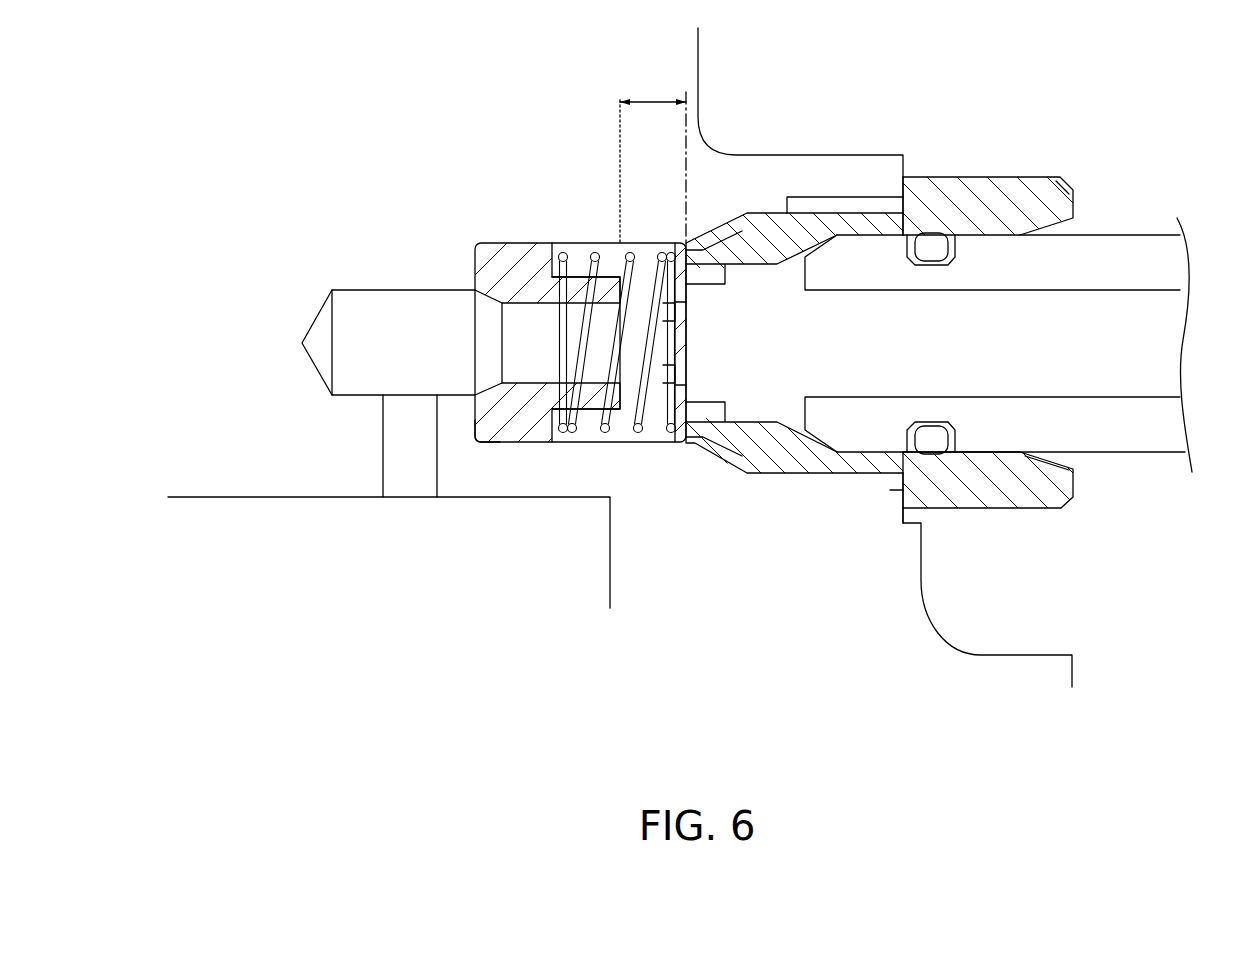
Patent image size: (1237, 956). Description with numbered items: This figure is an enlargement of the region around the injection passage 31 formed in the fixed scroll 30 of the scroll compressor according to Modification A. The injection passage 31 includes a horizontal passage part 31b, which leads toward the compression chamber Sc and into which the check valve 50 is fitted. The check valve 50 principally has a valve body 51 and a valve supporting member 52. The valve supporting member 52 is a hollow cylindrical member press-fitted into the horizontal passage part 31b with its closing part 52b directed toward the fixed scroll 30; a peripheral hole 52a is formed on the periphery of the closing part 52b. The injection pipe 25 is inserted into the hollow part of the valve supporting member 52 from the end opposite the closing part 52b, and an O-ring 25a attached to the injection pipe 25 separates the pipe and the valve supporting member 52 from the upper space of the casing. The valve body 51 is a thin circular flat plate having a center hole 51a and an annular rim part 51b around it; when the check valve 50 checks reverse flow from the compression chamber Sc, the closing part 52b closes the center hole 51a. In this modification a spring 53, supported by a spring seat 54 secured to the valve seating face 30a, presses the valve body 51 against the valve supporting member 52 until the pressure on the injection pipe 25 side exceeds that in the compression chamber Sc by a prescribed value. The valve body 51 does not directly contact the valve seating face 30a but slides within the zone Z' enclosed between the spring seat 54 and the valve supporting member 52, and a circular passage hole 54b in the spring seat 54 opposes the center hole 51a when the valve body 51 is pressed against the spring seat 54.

The injection pipe 25 is at (1070, 323).
The O-ring 25a is at (930, 235).
The fixed scroll 30 is at (727, 112).
The valve seating face 30a is at (485, 434).
The injection passage 31 is at (350, 329).
The horizontal passage part 31b is at (325, 270).
The check valve 50 is at (596, 316).
The valve body 51 is at (657, 349).
The center hole 51a is at (675, 363).
The rim part 51b is at (667, 443).
The valve supporting member 52 is at (939, 423).
The peripheral hole 52a is at (724, 277).
The closing part 52b is at (790, 470).
The spring 53 is at (637, 432).
The spring seat 54 is at (562, 372).
The circular passage hole 54b is at (588, 367).
The compression chamber Sc is at (370, 477).
The zone Z' is at (653, 154).